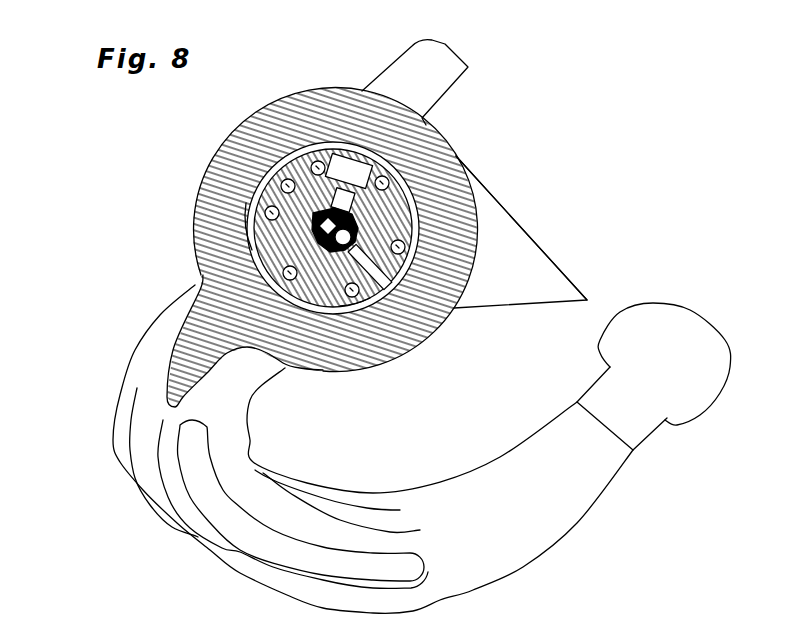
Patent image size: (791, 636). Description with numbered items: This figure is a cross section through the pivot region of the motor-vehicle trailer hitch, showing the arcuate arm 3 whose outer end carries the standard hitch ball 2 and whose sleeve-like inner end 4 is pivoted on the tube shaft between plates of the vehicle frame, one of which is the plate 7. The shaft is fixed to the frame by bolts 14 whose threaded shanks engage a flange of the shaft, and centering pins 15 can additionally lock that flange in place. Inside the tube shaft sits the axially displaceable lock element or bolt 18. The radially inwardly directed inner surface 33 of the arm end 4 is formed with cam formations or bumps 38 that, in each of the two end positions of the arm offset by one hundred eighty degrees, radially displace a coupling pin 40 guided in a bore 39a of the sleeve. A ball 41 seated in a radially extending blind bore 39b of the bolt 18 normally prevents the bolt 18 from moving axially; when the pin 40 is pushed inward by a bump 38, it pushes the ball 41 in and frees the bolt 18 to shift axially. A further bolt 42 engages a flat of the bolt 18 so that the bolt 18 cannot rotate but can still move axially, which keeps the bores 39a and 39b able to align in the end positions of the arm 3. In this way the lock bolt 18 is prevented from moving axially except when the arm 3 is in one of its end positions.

The hitch ball 2 is at (713, 390).
The arcuate arm 3 is at (556, 515).
The inner end 4 is at (457, 247).
The plate 7 is at (547, 273).
The bolts 14 is at (266, 209).
The centering pins 15 is at (278, 178).
The lock element or bolt 18 is at (250, 211).
The inner surface 33 is at (317, 146).
The cam formations or bumps 38 is at (282, 181).
The bore 39a is at (358, 302).
The blind bore 39b is at (456, 156).
The coupling pin 40 is at (418, 300).
The ball 41 is at (335, 239).
The bolt 42 is at (343, 170).